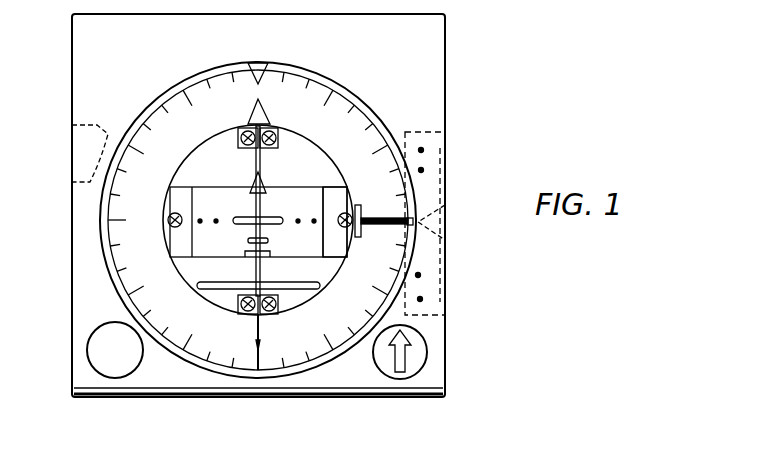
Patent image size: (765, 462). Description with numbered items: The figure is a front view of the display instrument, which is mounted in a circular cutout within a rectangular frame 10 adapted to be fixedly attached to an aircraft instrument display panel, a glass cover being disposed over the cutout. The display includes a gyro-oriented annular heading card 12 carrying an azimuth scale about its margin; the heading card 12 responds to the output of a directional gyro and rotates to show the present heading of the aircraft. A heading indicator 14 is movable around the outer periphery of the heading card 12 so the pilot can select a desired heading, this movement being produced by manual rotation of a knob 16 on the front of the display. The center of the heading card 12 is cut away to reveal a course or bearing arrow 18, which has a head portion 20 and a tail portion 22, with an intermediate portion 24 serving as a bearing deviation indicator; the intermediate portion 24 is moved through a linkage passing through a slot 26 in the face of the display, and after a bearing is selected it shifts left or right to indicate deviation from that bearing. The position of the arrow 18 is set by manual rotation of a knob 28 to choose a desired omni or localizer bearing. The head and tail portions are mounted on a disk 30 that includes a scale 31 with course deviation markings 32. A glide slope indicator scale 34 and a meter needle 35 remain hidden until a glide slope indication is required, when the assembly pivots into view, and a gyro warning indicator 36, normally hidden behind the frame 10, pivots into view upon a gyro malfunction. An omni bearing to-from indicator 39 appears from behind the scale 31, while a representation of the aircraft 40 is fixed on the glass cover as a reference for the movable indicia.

The rectangular frame 10 is at (446, 73).
The heading card 12 is at (352, 102).
The heading indicator 14 is at (378, 204).
The knob 16 is at (115, 350).
The course or bearing arrow 18 is at (280, 137).
The head portion 20 is at (270, 125).
The tail portion 22 is at (259, 347).
The intermediate portion 24 is at (263, 262).
The slot 26 is at (200, 283).
The knob 28 is at (426, 349).
The disk 30 is at (258, 220).
The scale 31 is at (315, 222).
The course deviation markings 32 is at (298, 219).
The glide slope indicator scale 34 is at (425, 142).
The meter needle 35 is at (440, 222).
The gyro warning indicator 36 is at (80, 142).
The omni bearing to-from indicator 39 is at (251, 190).
The representation of the aircraft 40 is at (245, 226).